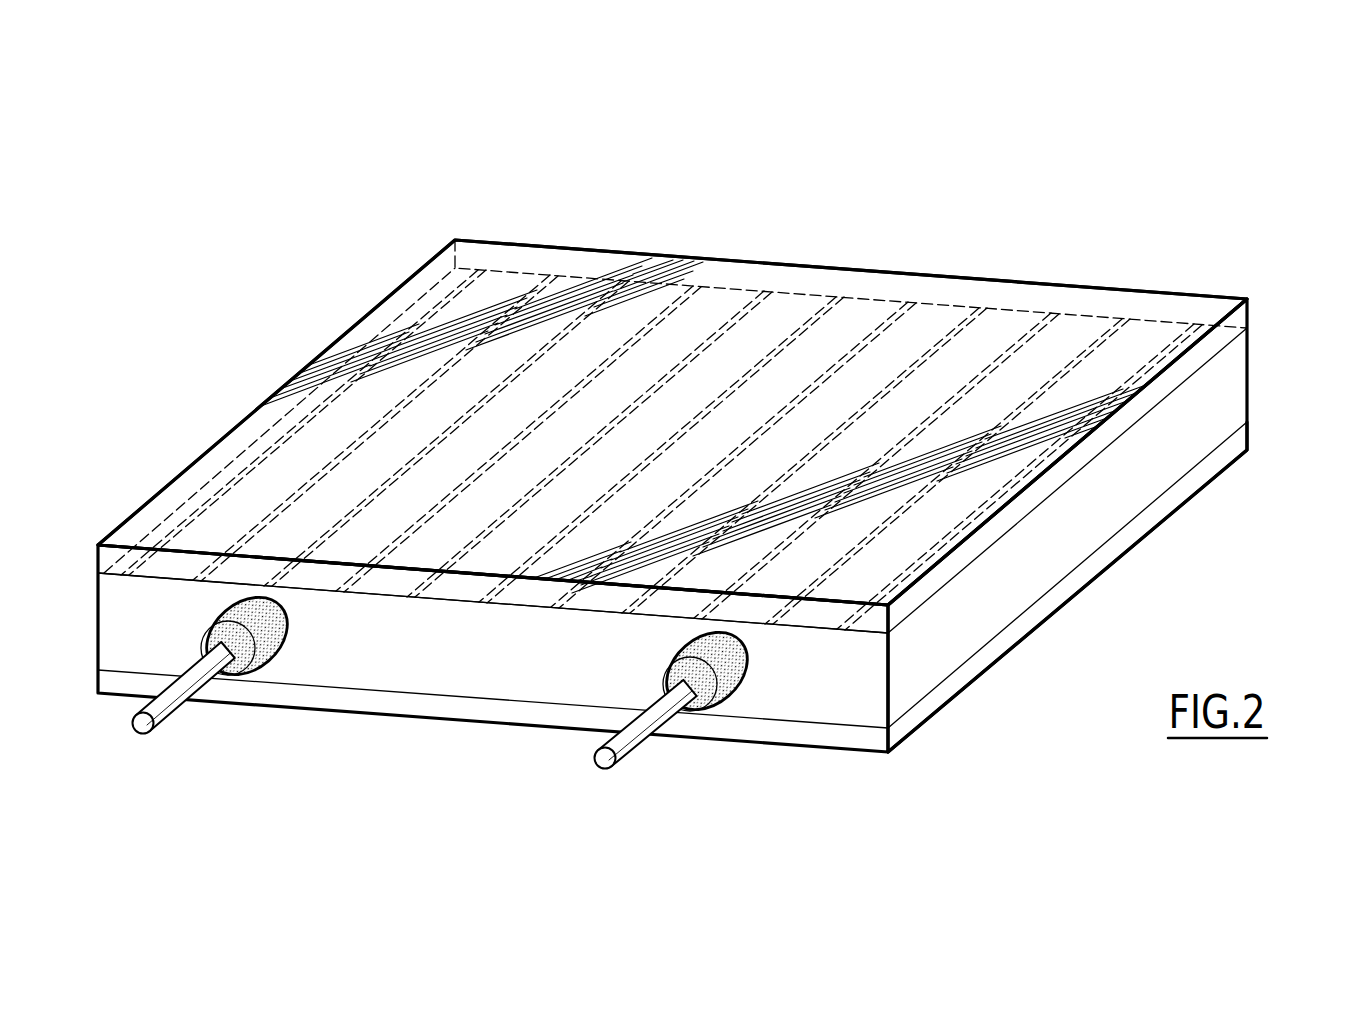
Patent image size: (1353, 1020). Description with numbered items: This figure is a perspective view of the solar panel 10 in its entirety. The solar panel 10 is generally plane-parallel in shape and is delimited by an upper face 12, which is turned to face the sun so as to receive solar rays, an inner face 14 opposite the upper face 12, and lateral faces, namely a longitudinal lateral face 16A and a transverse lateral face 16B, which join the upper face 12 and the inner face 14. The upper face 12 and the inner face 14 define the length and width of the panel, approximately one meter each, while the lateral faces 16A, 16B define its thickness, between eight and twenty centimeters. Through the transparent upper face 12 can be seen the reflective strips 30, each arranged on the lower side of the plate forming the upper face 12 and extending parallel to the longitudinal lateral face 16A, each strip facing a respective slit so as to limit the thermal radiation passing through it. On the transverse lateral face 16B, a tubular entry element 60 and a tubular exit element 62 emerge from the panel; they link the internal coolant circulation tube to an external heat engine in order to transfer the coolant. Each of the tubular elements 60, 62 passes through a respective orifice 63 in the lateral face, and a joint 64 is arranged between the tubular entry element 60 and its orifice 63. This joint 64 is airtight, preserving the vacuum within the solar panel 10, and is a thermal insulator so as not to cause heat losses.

The solar panel 10 is at (1163, 240).
The upper face 12 is at (789, 308).
The inner face 14 is at (985, 672).
The longitudinal lateral face 16A is at (1236, 370).
The transverse lateral face 16B is at (458, 667).
The reflective strip 30 is at (416, 590).
The tubular entry element 60 is at (660, 713).
The tubular exit element 62 is at (213, 683).
The orifice 63 is at (745, 665).
The joint 64 is at (693, 643).